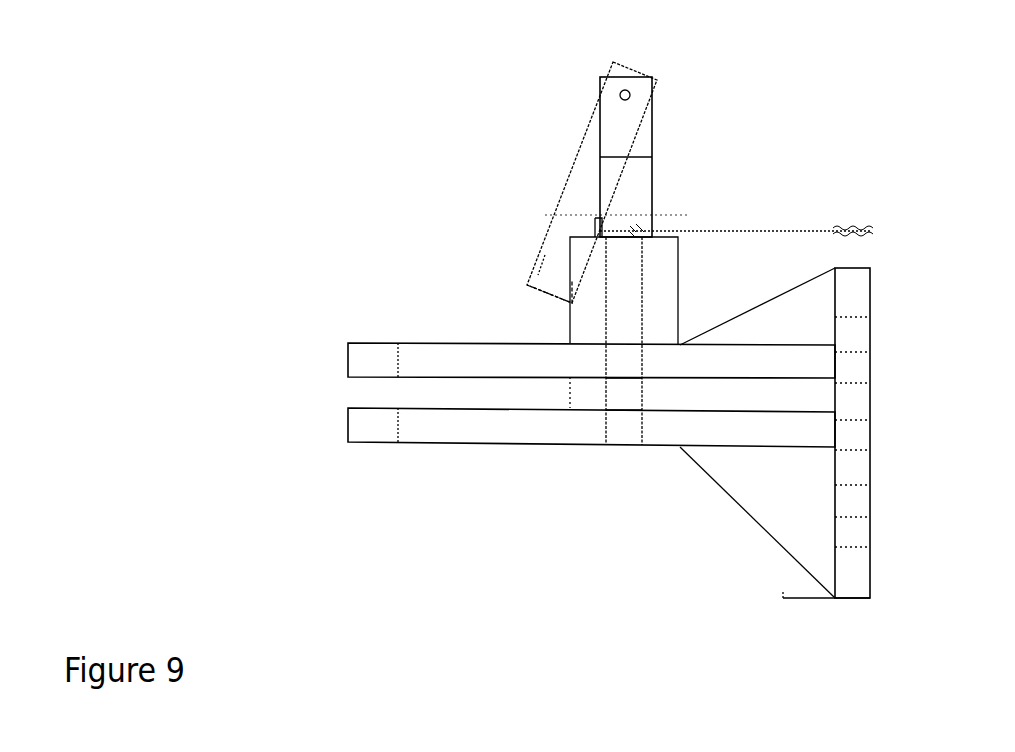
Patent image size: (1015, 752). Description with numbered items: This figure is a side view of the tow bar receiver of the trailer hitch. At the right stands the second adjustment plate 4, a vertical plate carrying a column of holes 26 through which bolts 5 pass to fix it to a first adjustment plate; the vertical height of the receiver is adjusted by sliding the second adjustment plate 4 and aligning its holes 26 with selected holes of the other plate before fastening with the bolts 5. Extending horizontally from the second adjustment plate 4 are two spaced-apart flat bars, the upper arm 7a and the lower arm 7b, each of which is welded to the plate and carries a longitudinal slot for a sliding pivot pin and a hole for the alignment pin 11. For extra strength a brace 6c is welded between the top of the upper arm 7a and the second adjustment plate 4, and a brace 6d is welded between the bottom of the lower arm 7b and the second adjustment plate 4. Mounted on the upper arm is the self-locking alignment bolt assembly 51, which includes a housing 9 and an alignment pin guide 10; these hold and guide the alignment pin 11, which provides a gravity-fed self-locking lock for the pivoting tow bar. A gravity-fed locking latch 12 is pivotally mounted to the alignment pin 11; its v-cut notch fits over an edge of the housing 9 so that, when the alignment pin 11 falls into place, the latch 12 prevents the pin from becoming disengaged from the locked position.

The self-locking alignment bolt assembly 51 is at (537, 162).
The alignment pin guide 10 is at (640, 187).
The gravity-fed locking latch 12 is at (545, 262).
The housing 9 is at (657, 298).
The brace 6c is at (783, 322).
The upper arm 7a is at (377, 358).
The lower arm 7b is at (362, 427).
The bolts 5 is at (592, 415).
The alignment pin 11 is at (628, 433).
The holes 26 is at (863, 435).
The brace 6d is at (778, 517).
The second adjustment plate 4 is at (852, 580).